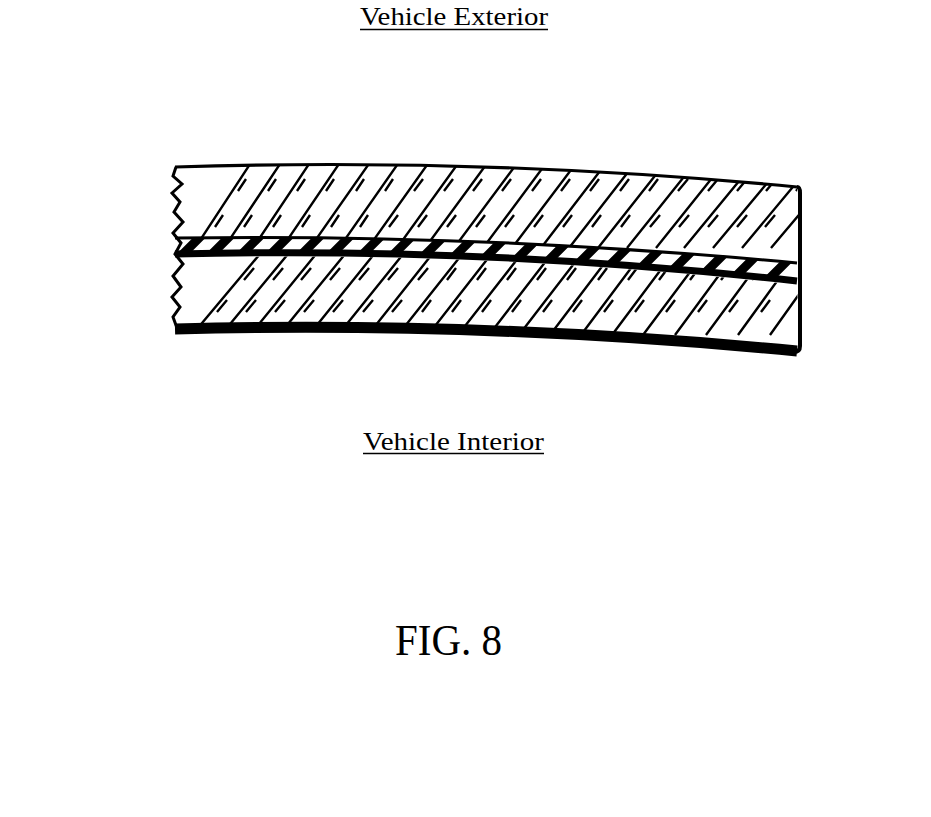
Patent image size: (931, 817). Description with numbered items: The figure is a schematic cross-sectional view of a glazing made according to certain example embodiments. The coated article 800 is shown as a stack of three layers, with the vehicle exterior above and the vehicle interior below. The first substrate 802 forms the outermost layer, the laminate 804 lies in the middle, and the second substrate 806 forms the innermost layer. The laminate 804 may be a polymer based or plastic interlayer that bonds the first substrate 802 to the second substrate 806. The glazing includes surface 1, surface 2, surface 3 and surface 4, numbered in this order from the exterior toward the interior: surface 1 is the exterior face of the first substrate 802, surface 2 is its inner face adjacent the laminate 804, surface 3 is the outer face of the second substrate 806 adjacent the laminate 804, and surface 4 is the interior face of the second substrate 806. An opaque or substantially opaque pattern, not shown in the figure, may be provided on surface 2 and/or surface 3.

The coated article 800 is at (266, 155).
The first substrate 802 is at (173, 203).
The laminate 804 is at (173, 258).
The second substrate 806 is at (177, 296).
The surface 1 is at (805, 192).
The surface 2 is at (805, 264).
The surface 3 is at (805, 286).
The surface 4 is at (805, 352).